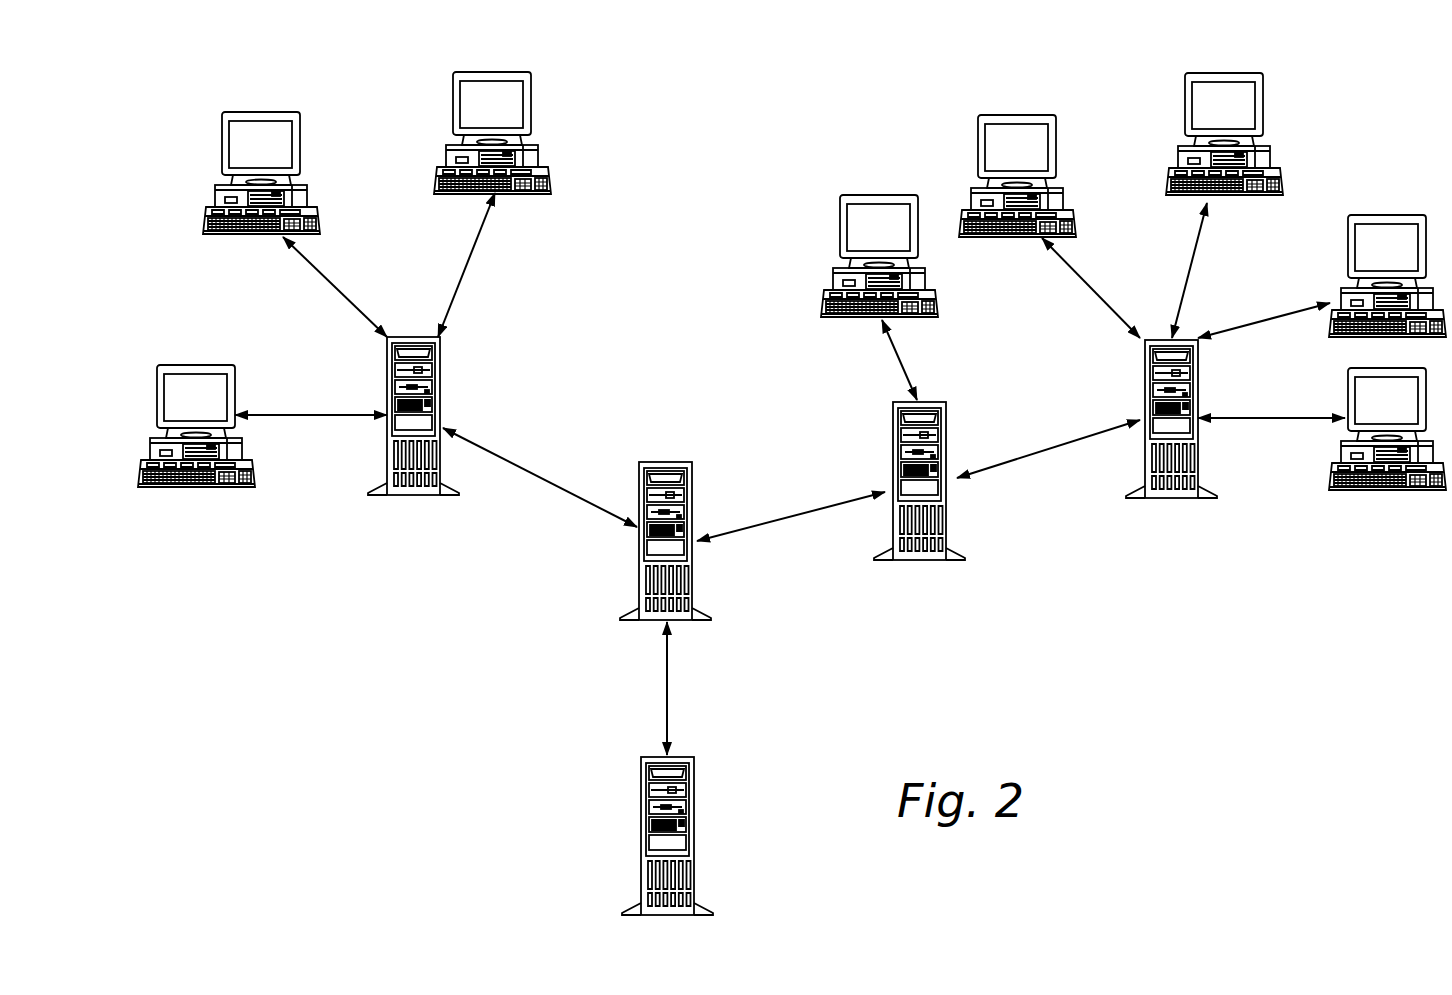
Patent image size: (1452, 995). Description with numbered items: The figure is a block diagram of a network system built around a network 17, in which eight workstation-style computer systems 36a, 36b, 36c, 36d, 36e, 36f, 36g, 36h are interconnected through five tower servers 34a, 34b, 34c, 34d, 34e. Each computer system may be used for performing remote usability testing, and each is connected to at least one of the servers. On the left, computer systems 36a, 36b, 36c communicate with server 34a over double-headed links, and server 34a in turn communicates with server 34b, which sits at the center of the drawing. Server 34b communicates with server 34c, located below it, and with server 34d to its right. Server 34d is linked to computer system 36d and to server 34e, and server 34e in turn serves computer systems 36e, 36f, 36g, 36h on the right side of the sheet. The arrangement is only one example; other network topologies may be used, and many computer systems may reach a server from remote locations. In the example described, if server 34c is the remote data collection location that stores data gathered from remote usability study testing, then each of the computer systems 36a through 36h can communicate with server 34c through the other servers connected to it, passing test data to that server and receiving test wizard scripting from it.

The network 17 is at (1152, 660).
The server 34a is at (440, 368).
The server 34b is at (692, 495).
The server 34c is at (695, 790).
The server 34d is at (947, 430).
The server 34e is at (1198, 385).
The computer system 36a is at (208, 365).
The computer system 36b is at (300, 137).
The computer system 36c is at (532, 95).
The computer system 36d is at (879, 195).
The computer system 36e is at (1058, 142).
The computer system 36f is at (1265, 100).
The computer system 36g is at (1398, 215).
The computer system 36h is at (1400, 488).